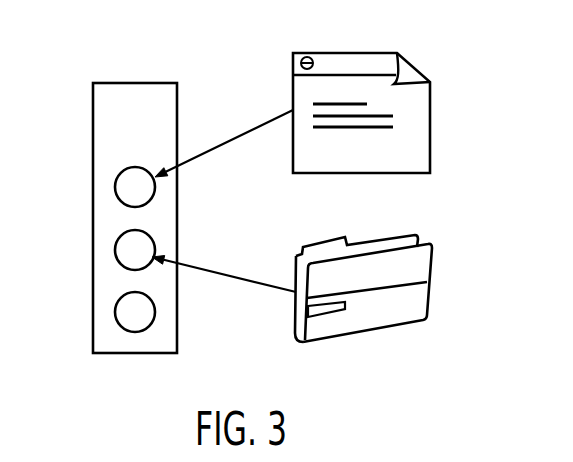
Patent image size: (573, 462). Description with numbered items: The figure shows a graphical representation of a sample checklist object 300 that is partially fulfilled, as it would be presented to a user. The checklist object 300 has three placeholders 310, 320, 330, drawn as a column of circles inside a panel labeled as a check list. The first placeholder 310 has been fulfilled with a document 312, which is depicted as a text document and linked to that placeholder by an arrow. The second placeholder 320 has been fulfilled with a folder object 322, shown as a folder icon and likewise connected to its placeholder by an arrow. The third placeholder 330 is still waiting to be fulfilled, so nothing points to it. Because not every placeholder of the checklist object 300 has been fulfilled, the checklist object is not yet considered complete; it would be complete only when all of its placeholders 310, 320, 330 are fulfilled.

The checklist object 300 is at (133, 82).
The placeholder 310 is at (115, 189).
The placeholder 320 is at (115, 251).
The placeholder 330 is at (115, 313).
The document 312 is at (430, 128).
The folder object 322 is at (432, 265).